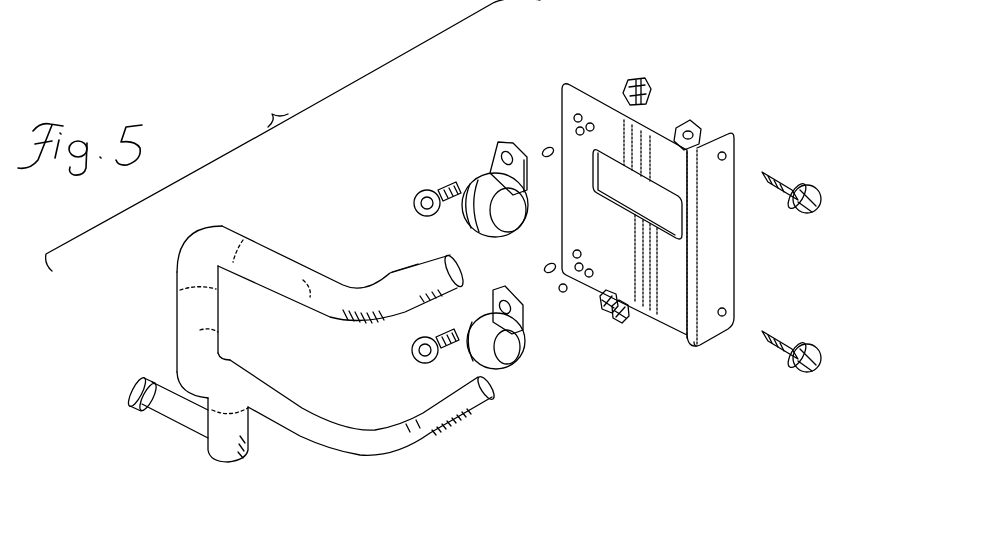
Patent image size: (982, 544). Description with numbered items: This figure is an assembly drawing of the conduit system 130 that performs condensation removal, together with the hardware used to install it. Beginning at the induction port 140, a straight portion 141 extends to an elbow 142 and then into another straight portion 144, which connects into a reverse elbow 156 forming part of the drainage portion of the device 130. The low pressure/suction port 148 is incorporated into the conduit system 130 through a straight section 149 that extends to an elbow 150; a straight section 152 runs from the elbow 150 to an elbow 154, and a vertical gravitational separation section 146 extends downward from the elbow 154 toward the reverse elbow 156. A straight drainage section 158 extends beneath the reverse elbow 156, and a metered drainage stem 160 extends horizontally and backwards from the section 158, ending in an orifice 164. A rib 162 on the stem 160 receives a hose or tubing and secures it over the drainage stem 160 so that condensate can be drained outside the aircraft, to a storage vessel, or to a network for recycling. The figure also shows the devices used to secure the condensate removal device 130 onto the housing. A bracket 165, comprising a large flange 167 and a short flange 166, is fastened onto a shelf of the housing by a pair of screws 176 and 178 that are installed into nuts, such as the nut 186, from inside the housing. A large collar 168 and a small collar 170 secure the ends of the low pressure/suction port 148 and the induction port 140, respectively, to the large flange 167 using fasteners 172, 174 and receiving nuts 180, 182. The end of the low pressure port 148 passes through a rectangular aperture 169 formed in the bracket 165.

The conduit system 130 is at (138, 328).
The induction port 140 is at (498, 386).
The straight portion 141 is at (463, 420).
The elbow 142 is at (357, 455).
The straight portion 144 is at (266, 390).
The vertical gravitational separation section 146 is at (220, 330).
The low pressure/suction port 148 is at (459, 257).
The straight section 149 is at (428, 260).
The elbow 150 is at (380, 316).
The straight section 152 is at (288, 268).
The elbow 154 is at (206, 235).
The reverse elbow 156 is at (240, 360).
The straight drainage section 158 is at (250, 445).
The metered drainage stem 160 is at (172, 410).
The rib 162 is at (142, 405).
The orifice 164 is at (133, 383).
The bracket 165 is at (722, 350).
The short flange 166 is at (728, 178).
The large flange 167 is at (610, 128).
The large collar 168 is at (488, 175).
The rectangular aperture 169 is at (690, 214).
The small collar 170 is at (524, 345).
The fastener 172 is at (430, 368).
The fastener 174 is at (418, 191).
The screw 176 is at (820, 192).
The screw 178 is at (800, 338).
The receiving nut 180 is at (624, 320).
The receiving nut 182 is at (643, 84).
The nut 186 is at (684, 136).